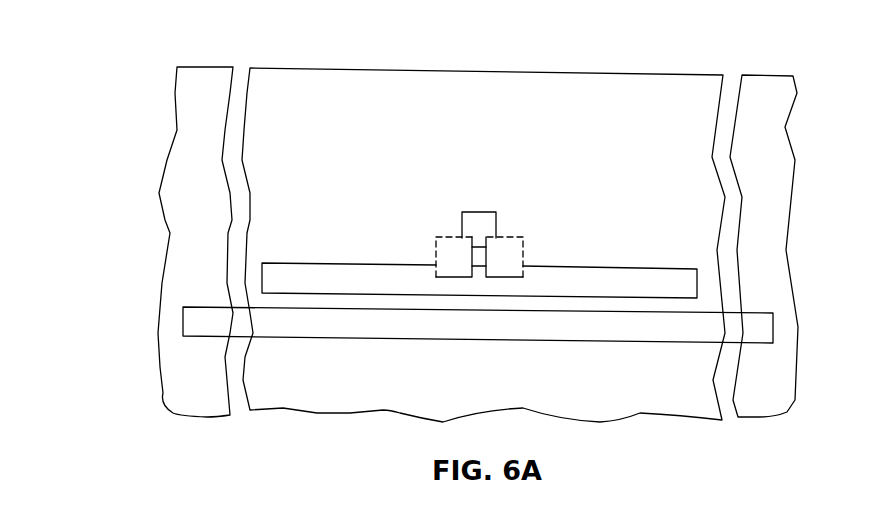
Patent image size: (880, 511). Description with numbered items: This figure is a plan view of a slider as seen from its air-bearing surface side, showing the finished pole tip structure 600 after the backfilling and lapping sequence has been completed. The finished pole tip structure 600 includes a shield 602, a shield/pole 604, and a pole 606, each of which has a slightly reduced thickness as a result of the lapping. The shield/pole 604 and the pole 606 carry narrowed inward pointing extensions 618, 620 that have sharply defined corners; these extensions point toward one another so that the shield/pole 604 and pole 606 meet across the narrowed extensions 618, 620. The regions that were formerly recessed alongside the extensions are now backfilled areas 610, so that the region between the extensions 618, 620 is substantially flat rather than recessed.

The finished pole tip structure 600 is at (155, 97).
The shield 602 is at (633, 330).
The shield/pole 604 is at (653, 277).
The pole 606 is at (468, 212).
The backfilled areas 610 is at (450, 245).
The inward pointing extension 618 is at (480, 243).
The inward pointing extension 620 is at (479, 275).